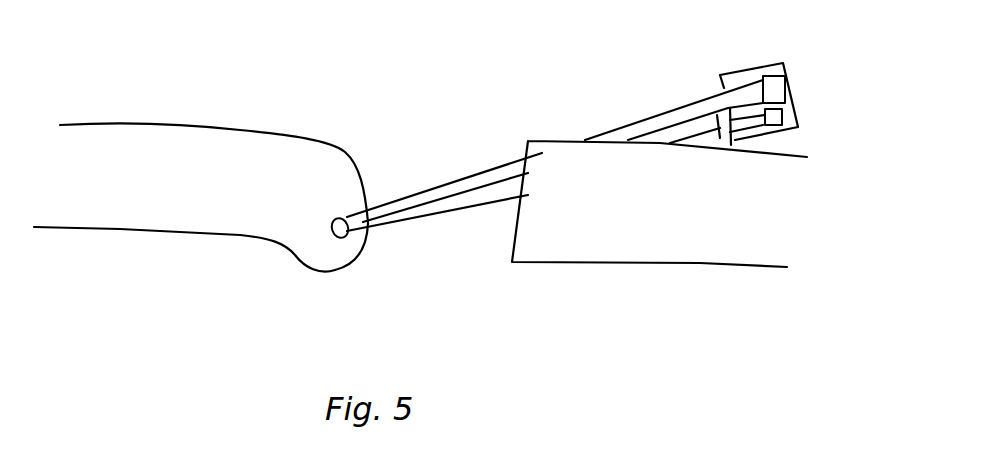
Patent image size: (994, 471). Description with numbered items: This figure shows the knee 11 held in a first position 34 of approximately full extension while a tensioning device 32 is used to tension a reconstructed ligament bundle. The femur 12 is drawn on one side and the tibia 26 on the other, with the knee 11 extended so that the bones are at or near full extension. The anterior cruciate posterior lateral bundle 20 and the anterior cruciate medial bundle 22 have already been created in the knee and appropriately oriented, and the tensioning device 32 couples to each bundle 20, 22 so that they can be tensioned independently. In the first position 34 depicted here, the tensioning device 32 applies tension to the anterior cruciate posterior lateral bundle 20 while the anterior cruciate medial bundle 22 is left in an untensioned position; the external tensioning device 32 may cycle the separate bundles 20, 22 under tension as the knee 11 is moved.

The knee 11 is at (211, 228).
The femur 12 is at (317, 157).
The anterior cruciate posterior lateral bundle 20 is at (662, 112).
The anterior cruciate medial bundle 22 is at (462, 203).
The tibia 26 is at (562, 243).
The tensioning device 32 is at (793, 100).
The first position 34 is at (696, 82).